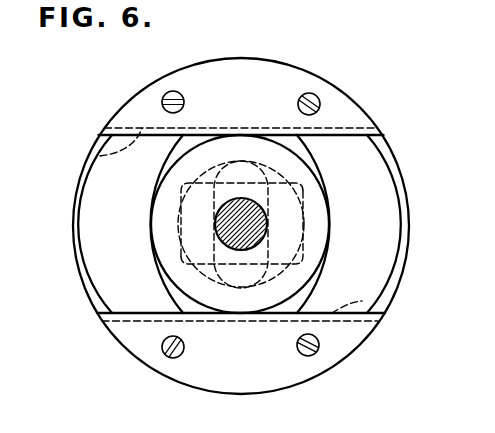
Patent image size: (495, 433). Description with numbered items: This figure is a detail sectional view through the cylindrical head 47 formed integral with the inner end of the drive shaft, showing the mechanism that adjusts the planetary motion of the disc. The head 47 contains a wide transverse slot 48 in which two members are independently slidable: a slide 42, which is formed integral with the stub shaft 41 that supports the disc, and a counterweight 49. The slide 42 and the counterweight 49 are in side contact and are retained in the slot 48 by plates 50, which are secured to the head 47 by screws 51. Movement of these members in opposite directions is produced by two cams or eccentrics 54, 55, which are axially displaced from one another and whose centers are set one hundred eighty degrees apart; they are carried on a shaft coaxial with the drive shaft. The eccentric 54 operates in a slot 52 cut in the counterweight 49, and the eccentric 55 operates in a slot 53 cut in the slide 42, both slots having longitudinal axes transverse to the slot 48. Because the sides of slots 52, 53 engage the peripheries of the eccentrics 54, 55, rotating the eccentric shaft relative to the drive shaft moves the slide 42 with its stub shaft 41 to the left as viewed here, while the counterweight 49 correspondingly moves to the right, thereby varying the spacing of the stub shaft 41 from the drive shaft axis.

The stub shaft 41 is at (240, 226).
The slide 42 is at (395, 206).
The cylindrical head 47 is at (393, 148).
The transverse slot 48 is at (100, 156).
The counterweight 49 is at (95, 209).
The plates 50 is at (290, 72).
The screws 51 is at (321, 101).
The slot 52 is at (181, 183).
The slot 53 is at (304, 186).
The eccentric 54 is at (181, 264).
The eccentric 55 is at (305, 261).